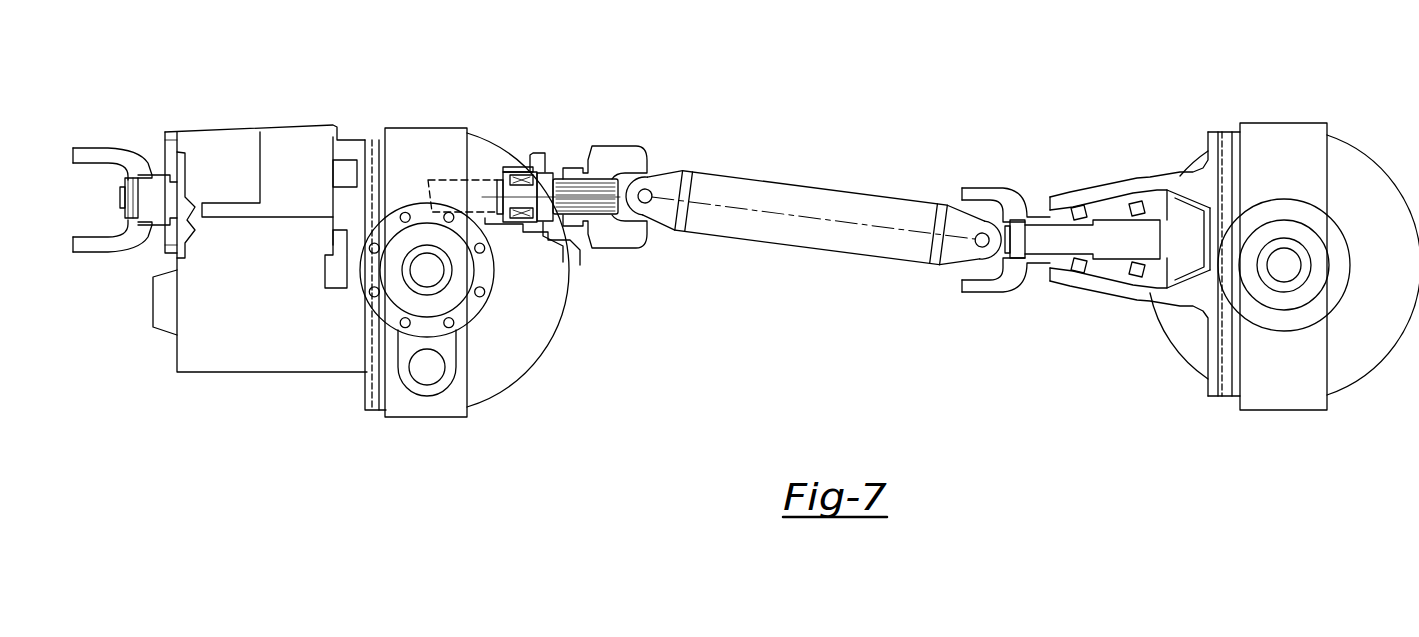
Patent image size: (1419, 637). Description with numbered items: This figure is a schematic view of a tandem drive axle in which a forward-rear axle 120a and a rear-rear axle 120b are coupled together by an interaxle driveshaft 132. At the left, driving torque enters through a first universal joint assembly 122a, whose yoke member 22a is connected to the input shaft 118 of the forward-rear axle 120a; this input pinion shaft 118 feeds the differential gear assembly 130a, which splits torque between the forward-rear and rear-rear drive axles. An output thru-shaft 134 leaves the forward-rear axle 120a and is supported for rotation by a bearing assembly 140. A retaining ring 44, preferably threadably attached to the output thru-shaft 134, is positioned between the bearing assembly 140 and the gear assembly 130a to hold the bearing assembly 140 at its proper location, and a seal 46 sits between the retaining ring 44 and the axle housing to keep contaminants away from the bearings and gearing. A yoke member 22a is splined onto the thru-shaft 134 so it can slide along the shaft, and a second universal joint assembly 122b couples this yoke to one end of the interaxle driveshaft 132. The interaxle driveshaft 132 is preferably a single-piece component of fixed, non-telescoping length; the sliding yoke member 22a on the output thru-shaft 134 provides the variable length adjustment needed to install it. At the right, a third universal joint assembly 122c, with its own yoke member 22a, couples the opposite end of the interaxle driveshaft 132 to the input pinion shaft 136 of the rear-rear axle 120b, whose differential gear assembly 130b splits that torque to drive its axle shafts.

The yoke member 22a is at (113, 155).
The first universal joint assembly 122a is at (150, 153).
The input shaft 118 is at (153, 200).
The differential gear assembly 130a is at (401, 204).
The retaining ring 44 is at (503, 178).
The bearing assembly 140 is at (514, 172).
The seal 46 is at (543, 222).
The output thru-shaft 134 is at (583, 210).
The second universal joint assembly 122b is at (655, 165).
The interaxle driveshaft 132 is at (838, 246).
The third universal joint assembly 122c is at (1036, 189).
The input pinion shaft 136 is at (1048, 245).
The differential gear assembly 130b is at (1345, 225).
The forward-rear axle 120a is at (478, 430).
The rear-rear axle 120b is at (1267, 424).